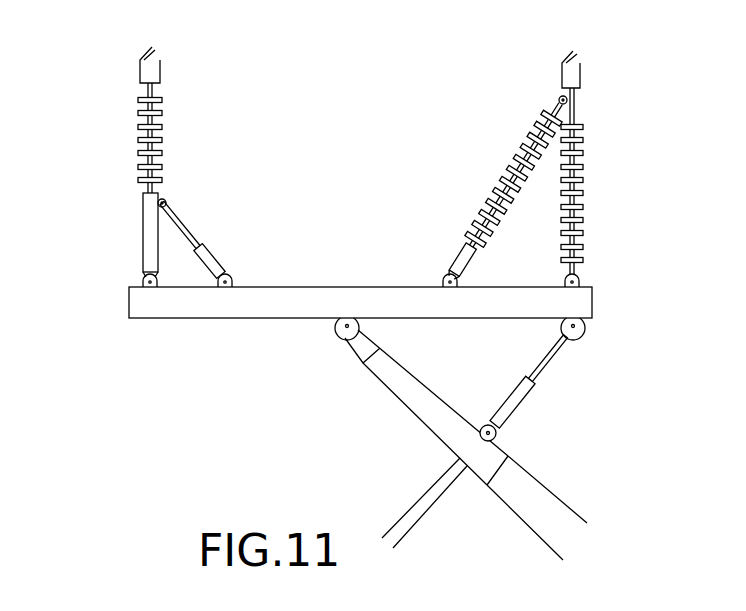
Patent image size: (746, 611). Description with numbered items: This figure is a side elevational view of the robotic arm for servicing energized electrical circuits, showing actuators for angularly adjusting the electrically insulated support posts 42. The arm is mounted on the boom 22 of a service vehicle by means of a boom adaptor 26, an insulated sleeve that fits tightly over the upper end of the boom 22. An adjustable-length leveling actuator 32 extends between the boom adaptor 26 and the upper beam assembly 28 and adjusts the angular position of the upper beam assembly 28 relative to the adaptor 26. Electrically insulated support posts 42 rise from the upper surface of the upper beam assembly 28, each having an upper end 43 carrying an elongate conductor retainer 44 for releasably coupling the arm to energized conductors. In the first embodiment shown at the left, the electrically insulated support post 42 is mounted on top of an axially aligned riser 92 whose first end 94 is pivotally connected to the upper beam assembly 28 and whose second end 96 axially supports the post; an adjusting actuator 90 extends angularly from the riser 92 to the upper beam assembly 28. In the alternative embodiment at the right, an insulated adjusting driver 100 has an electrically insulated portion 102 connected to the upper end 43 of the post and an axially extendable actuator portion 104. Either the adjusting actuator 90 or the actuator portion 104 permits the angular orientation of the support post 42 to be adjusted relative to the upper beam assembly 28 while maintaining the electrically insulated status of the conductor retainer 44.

The boom 22 is at (530, 478).
The boom adaptor 26 is at (407, 410).
The upper beam assembly 28 is at (247, 318).
The leveling actuator 32 is at (527, 397).
The electrically insulated support post 42 is at (160, 127).
The upper end 43 is at (578, 100).
The elongate conductor retainer 44 is at (160, 70).
The adjusting actuator 90 is at (198, 237).
The riser 92 is at (143, 232).
The first end 94 is at (143, 283).
The second end 96 is at (147, 193).
The insulated adjusting driver 100 is at (463, 175).
The electrically insulated portion 102 is at (527, 137).
The axially extendable actuator portion 104 is at (457, 250).